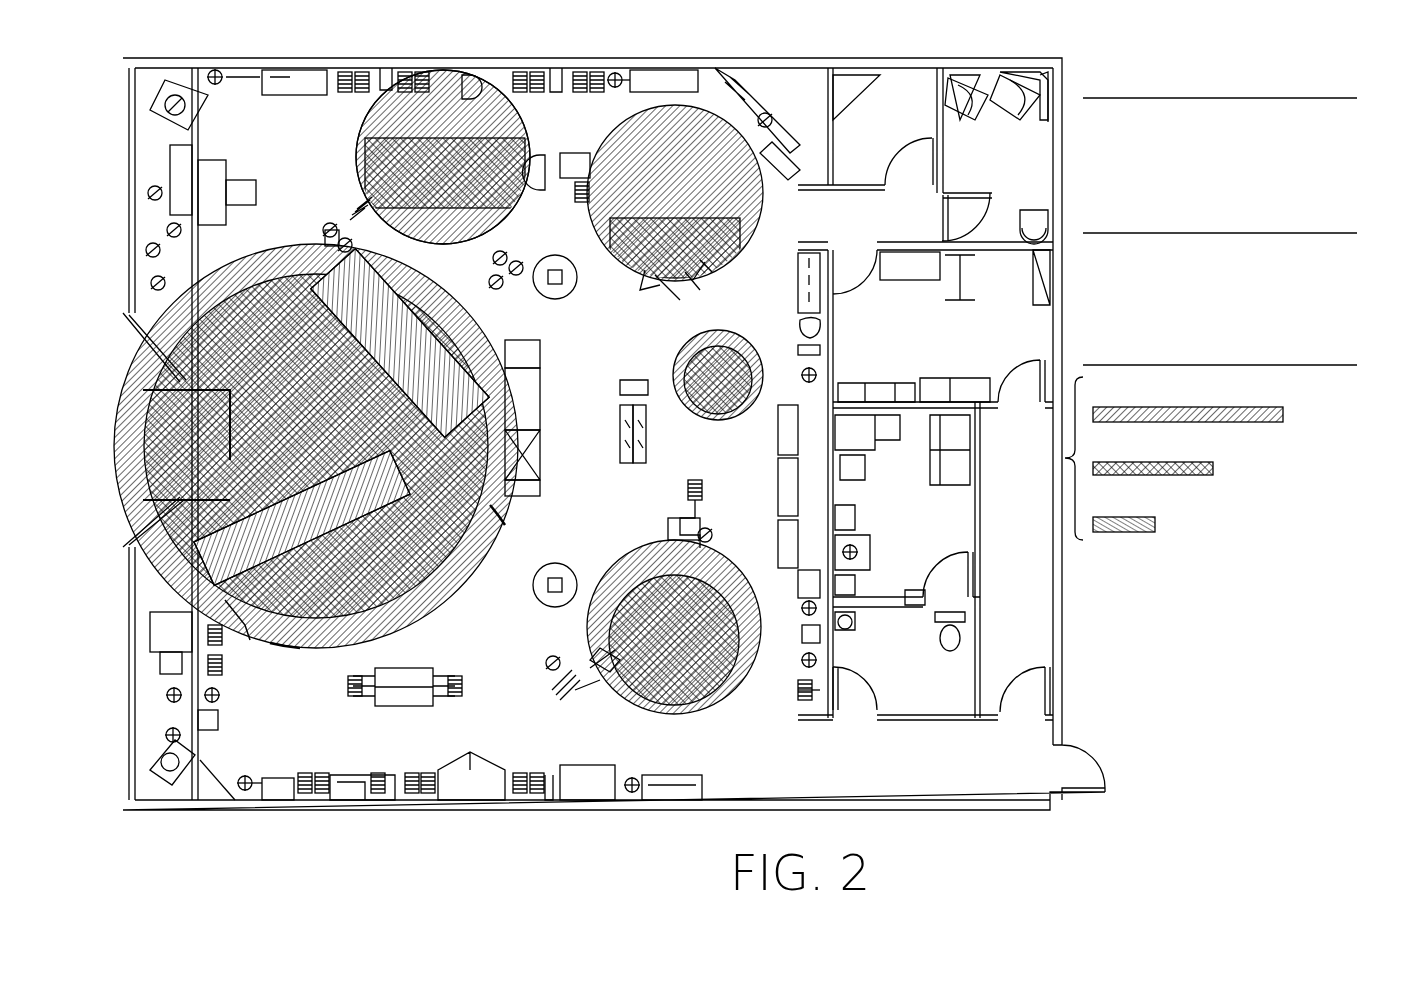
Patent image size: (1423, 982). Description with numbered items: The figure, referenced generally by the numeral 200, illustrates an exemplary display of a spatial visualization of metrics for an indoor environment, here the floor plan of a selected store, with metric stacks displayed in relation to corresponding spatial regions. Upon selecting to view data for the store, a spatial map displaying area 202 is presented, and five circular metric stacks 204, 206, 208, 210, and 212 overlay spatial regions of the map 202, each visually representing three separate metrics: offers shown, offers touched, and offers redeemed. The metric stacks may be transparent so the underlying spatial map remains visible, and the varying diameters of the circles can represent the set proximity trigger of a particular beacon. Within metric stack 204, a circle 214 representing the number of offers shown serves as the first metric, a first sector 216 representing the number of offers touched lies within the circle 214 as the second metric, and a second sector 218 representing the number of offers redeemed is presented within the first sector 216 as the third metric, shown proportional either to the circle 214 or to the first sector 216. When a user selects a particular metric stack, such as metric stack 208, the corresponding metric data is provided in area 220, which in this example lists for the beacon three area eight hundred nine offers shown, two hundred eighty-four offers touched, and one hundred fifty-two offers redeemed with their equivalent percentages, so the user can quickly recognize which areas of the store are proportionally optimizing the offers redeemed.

The spatial visualization display 200 is at (1193, 706).
The spatial map displaying area 202 is at (556, 60).
The metric stack 204 is at (232, 268).
The metric stack 206 is at (532, 145).
The metric stack 208 is at (760, 225).
The metric stack 210 is at (718, 330).
The metric stack 212 is at (742, 572).
The first metric (circle representing offers shown) 214 is at (505, 525).
The second metric (first sector representing offers touched) 216 is at (292, 650).
The third metric (second sector representing offers redeemed) 218 is at (243, 640).
The metric data area 220 is at (1068, 460).